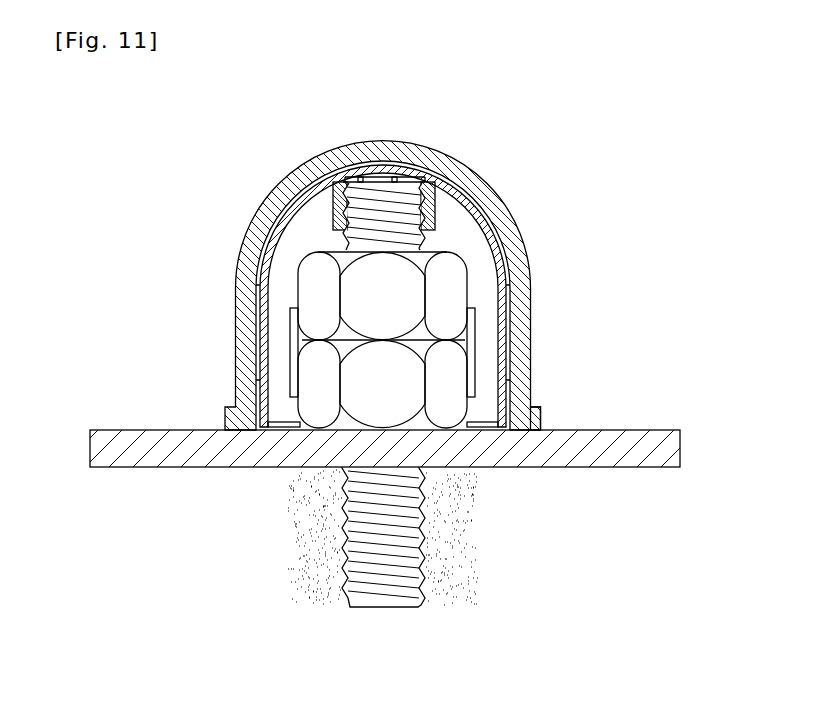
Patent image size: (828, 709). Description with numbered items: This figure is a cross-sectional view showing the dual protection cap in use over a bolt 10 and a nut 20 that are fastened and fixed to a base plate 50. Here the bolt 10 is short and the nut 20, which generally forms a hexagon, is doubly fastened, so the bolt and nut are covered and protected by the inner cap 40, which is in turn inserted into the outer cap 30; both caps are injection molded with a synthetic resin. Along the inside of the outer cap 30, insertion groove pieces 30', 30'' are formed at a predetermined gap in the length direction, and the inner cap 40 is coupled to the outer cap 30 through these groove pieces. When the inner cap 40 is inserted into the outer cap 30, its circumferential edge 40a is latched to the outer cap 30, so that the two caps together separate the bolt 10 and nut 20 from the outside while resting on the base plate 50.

The bolt 10 is at (402, 210).
The nut 20 is at (457, 392).
The outer cap 30 is at (363, 285).
The insertion groove piece 30' is at (361, 352).
The insertion groove piece 30'' is at (412, 332).
The inner cap 40 is at (503, 356).
The circumferential edge 40a is at (541, 416).
The base plate 50 is at (643, 468).